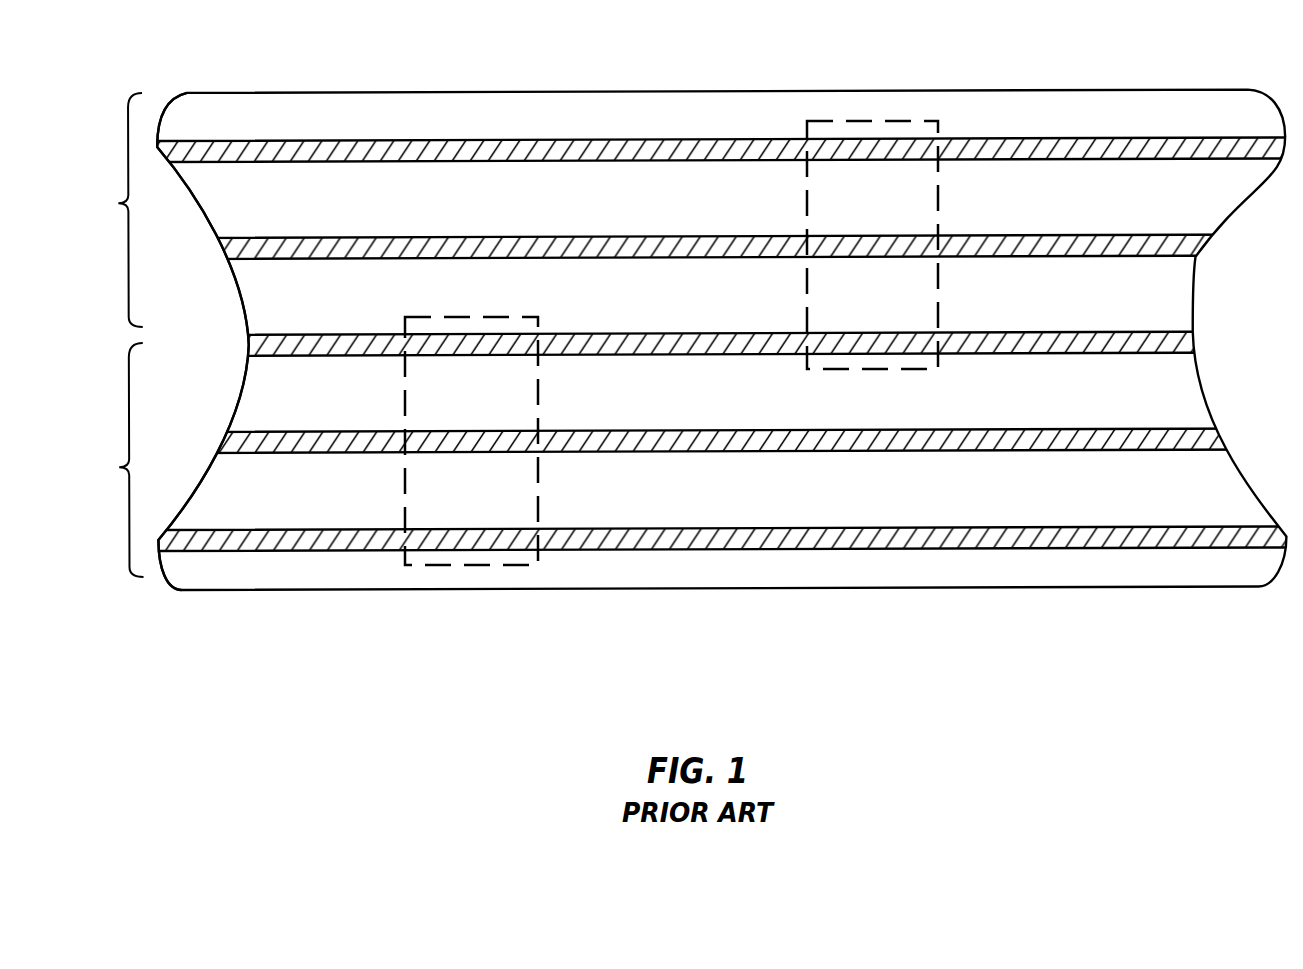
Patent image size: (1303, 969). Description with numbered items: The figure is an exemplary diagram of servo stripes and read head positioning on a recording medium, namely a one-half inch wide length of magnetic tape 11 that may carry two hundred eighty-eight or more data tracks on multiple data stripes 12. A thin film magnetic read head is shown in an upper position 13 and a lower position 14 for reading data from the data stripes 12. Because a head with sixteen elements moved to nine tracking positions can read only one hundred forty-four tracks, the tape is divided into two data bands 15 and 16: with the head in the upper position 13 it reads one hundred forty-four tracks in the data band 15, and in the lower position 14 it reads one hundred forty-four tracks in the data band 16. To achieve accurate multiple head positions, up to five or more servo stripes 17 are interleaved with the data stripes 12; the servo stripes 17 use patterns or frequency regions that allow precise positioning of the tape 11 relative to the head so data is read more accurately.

The magnetic tape 11 is at (1190, 106).
The data stripes 12 is at (202, 198).
The upper position 13 is at (880, 128).
The lower position 14 is at (485, 553).
The data band 15 is at (688, 222).
The data band 16 is at (689, 458).
The servo stripes 17 is at (721, 149).